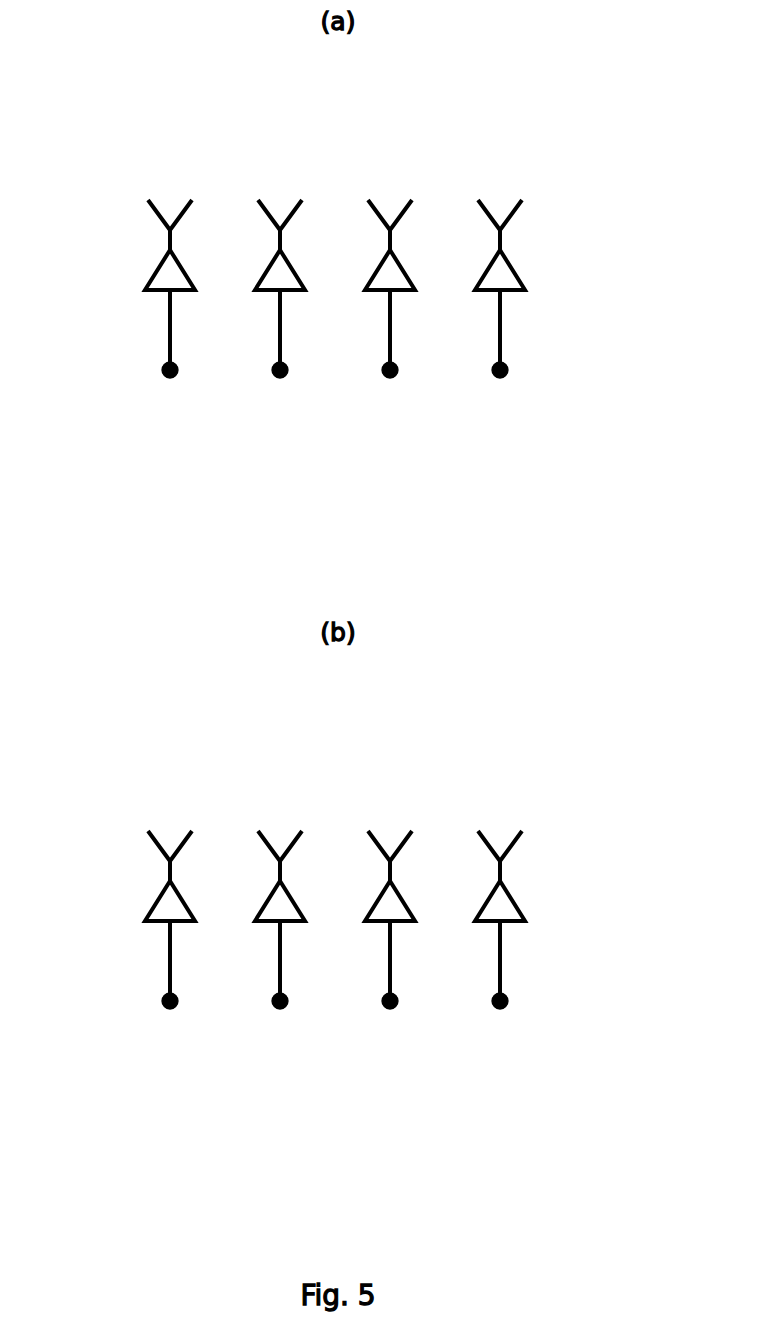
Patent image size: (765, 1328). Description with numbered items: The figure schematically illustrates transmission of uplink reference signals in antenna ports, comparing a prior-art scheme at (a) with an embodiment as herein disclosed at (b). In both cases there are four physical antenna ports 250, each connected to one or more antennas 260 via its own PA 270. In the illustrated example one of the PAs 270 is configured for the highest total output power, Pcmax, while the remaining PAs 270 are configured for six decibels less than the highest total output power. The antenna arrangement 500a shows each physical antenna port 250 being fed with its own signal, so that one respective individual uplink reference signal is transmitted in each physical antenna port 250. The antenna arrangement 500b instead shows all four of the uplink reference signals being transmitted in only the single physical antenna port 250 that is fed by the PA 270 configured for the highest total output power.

The antenna arrangement 500a is at (223, 106).
The antenna arrangement 500b is at (223, 716).
The physical antenna port 250 is at (507, 371).
The antenna 260 is at (518, 212).
The PA 270 is at (512, 268).